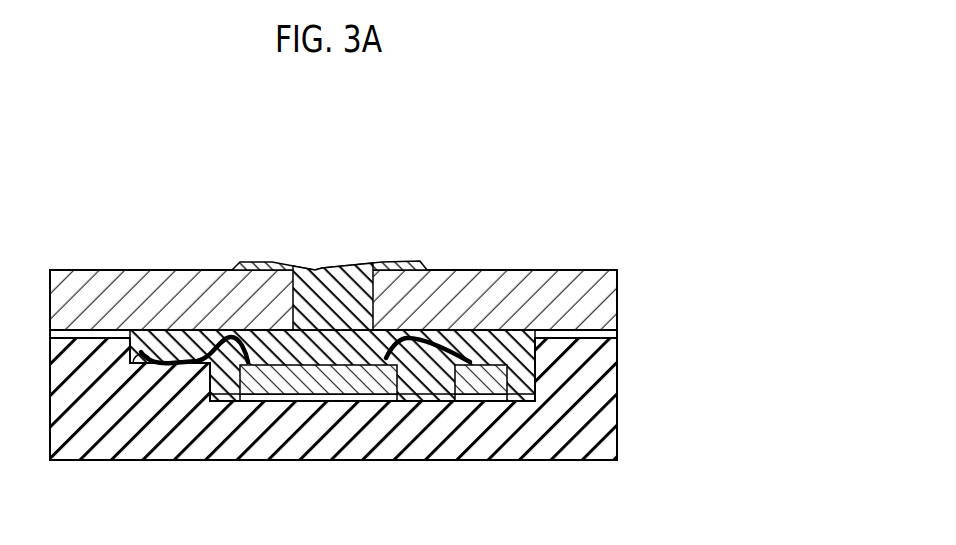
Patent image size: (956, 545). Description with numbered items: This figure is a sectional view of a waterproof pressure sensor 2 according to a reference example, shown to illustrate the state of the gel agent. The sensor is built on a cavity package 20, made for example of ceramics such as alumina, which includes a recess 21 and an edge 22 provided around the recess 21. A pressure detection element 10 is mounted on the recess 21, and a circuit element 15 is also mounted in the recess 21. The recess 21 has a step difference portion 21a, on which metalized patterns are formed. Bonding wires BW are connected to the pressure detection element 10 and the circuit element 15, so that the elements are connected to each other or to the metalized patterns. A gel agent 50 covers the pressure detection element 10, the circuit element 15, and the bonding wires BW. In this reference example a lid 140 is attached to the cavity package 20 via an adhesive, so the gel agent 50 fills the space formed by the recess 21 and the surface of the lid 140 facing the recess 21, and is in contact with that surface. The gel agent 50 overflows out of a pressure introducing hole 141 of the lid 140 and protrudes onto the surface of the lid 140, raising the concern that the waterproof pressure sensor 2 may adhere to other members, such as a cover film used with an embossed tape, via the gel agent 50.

The waterproof pressure sensor 2 is at (563, 172).
The lid 140 is at (585, 300).
The pressure introducing hole 141 is at (316, 290).
The gel agent 50 is at (363, 330).
The edge 22 is at (586, 333).
The cavity package 20 is at (593, 423).
The recess 21 is at (534, 386).
The step difference portion 21a is at (141, 358).
The circuit element 15 is at (323, 378).
The pressure detection element 10 is at (478, 380).
The bonding wires BW is at (230, 332).